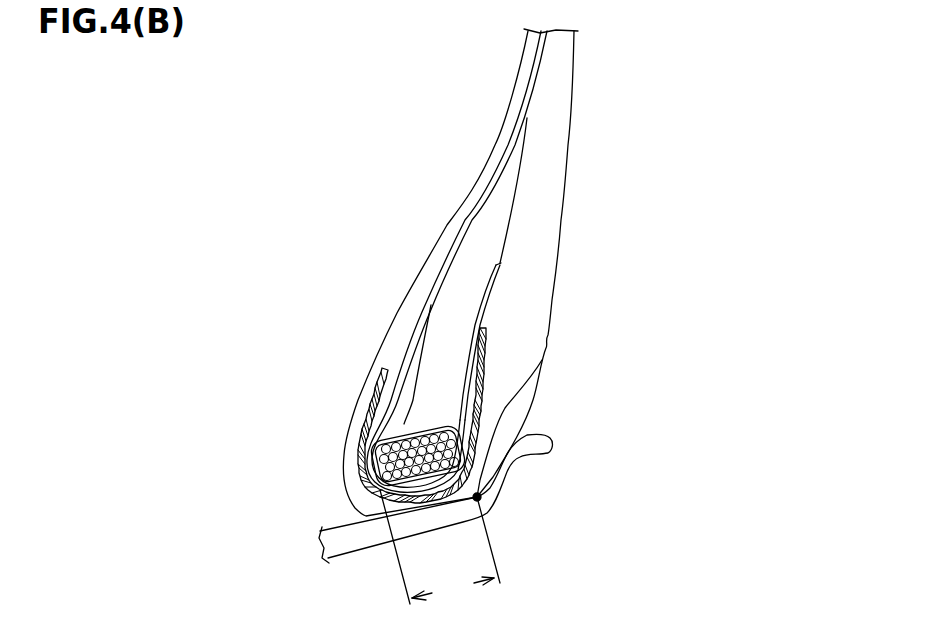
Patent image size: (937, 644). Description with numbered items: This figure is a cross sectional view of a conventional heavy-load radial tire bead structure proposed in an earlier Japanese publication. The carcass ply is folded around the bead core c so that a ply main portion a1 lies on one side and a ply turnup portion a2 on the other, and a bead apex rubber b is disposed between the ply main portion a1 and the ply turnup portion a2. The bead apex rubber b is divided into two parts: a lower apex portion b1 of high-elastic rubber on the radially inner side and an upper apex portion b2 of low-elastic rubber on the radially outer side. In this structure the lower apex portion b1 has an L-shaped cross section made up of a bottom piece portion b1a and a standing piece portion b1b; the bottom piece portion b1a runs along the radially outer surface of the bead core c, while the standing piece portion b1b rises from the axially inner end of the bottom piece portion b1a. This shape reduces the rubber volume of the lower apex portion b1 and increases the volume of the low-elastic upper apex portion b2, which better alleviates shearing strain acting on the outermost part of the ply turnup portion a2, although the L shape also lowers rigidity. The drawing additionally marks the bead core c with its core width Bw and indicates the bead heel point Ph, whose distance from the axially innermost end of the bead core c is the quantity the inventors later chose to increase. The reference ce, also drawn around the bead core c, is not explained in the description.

The ply main portion a1 is at (463, 238).
The ply turnup portion a2 is at (545, 358).
The bead apex rubber b is at (554, 261).
The lower apex portion b1 is at (537, 261).
The bottom piece portion b1a is at (433, 413).
The standing piece portion b1b is at (413, 360).
The upper apex portion b2 is at (482, 248).
The bead core c is at (400, 440).
The bead core covering ce is at (372, 468).
The core width Bw is at (440, 547).
The bead heel point Ph is at (477, 497).